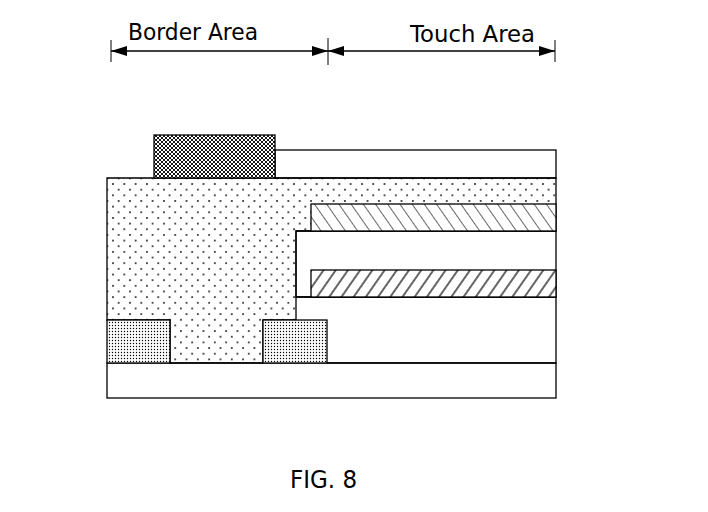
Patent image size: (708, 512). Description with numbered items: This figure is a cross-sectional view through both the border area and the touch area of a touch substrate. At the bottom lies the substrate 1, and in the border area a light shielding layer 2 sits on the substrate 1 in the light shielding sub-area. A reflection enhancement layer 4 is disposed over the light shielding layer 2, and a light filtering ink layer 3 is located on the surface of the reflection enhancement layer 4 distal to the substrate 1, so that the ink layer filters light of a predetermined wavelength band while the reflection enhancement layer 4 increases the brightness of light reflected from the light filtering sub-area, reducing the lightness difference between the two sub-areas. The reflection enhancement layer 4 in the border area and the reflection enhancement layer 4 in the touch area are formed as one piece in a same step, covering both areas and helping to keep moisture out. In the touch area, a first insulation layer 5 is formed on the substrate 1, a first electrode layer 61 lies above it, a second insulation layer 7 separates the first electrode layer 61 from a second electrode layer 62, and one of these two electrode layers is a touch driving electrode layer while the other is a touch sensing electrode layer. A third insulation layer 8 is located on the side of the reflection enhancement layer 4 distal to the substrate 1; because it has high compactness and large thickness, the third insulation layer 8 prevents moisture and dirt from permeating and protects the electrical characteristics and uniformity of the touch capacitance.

The substrate 1 is at (172, 382).
The light shielding layer 2 is at (120, 338).
The light filtering ink layer 3 is at (208, 152).
The reflection enhancement layer 4 is at (538, 190).
The first insulation layer 5 is at (548, 350).
The second insulation layer 7 is at (537, 247).
The third insulation layer 8 is at (420, 163).
The first electrode layer 61 is at (542, 287).
The second electrode layer 62 is at (540, 220).